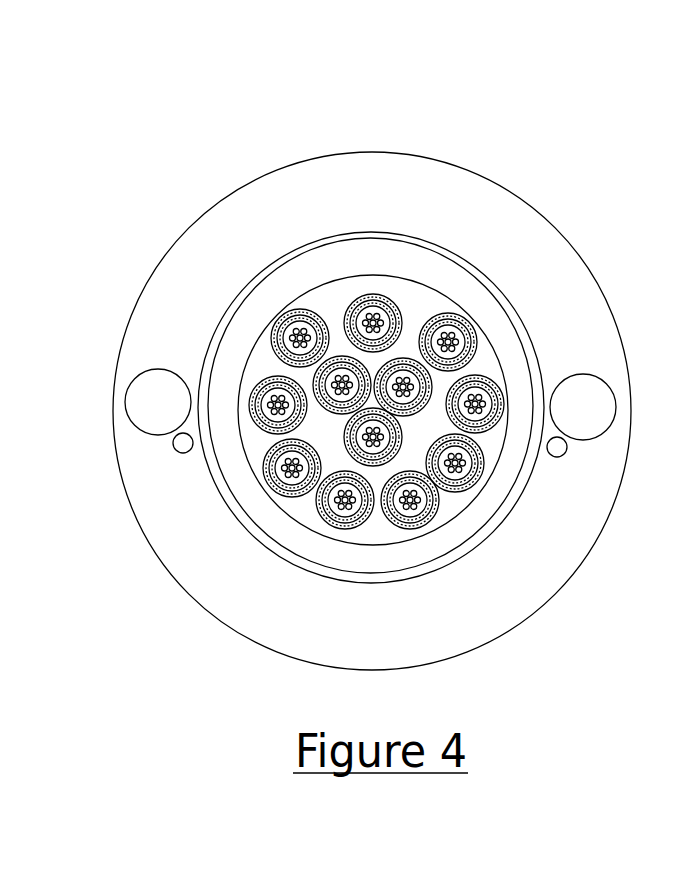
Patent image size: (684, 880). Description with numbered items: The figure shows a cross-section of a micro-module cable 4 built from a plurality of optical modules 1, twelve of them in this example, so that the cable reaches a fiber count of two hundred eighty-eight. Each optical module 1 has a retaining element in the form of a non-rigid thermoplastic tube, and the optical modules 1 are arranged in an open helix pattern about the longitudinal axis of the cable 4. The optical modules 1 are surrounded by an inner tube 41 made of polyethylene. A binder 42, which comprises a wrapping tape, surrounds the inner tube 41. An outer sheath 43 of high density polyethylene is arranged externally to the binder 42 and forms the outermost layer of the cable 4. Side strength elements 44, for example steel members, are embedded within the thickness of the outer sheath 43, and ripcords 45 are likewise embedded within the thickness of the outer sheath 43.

The micro-module cable 4 is at (233, 105).
The optical module 1 is at (397, 275).
The inner tube 41 is at (502, 318).
The binder 42 is at (480, 270).
The outer sheath 43 is at (370, 150).
The side strength elements 44 is at (137, 382).
The ripcords 45 is at (185, 453).